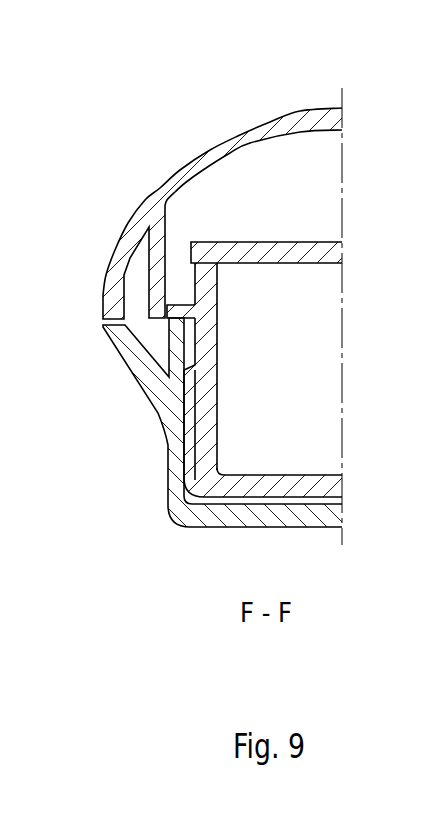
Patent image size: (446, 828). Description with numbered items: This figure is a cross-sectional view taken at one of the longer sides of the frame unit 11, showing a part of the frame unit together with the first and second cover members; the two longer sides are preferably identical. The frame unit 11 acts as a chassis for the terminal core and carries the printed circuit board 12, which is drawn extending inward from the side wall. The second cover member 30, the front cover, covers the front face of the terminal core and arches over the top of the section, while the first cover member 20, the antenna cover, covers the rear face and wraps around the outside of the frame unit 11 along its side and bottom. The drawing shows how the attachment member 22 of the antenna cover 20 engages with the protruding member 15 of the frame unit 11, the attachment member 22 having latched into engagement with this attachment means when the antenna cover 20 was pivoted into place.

The second cover member 30 is at (300, 108).
The printed circuit board 12 is at (307, 242).
The protruding member 15 is at (196, 338).
The attachment member 22 is at (182, 305).
The frame unit 11 is at (273, 480).
The first cover member 20 is at (152, 398).